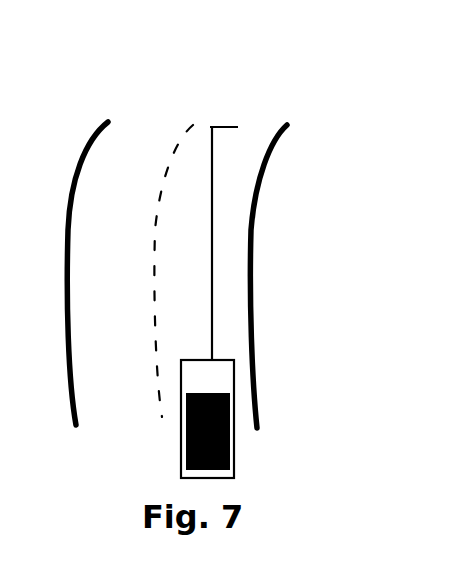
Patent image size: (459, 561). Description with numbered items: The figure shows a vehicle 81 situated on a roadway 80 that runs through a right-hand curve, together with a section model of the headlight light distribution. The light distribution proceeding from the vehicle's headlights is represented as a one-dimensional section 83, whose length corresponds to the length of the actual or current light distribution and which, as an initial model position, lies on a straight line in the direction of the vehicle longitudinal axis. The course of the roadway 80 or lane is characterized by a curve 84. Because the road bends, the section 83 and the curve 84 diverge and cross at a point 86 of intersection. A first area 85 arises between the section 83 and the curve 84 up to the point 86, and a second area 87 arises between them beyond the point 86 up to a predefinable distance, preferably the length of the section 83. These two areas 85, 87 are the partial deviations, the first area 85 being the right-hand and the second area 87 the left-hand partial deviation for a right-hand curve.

The roadway 80 is at (277, 142).
The vehicle 81 is at (215, 380).
The section 83 is at (211, 232).
The curve 84 is at (211, 272).
The area 85 is at (211, 310).
The point of intersection 86 is at (211, 178).
The area 87 is at (222, 130).